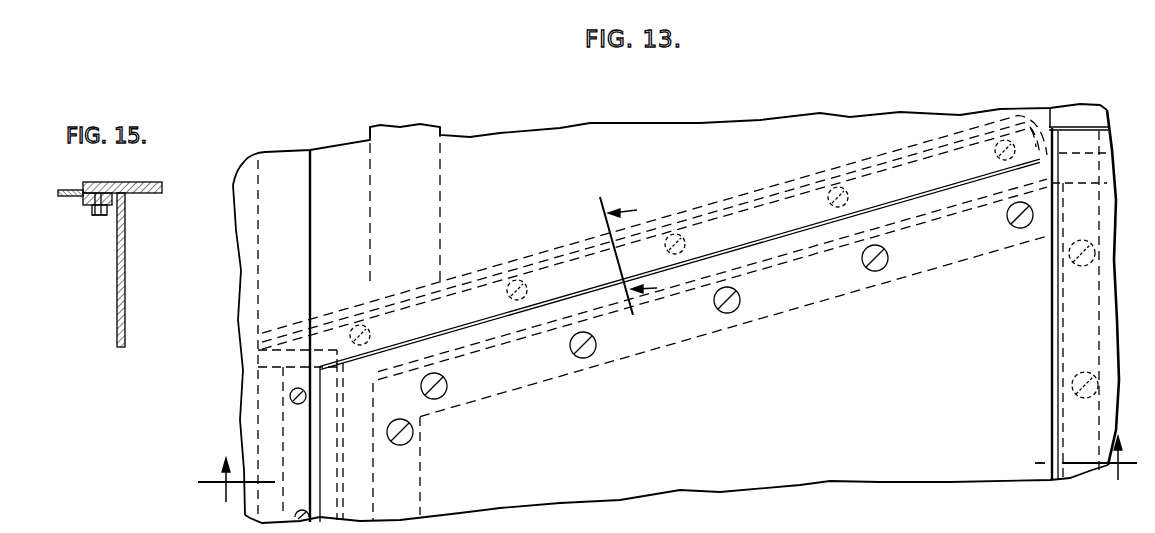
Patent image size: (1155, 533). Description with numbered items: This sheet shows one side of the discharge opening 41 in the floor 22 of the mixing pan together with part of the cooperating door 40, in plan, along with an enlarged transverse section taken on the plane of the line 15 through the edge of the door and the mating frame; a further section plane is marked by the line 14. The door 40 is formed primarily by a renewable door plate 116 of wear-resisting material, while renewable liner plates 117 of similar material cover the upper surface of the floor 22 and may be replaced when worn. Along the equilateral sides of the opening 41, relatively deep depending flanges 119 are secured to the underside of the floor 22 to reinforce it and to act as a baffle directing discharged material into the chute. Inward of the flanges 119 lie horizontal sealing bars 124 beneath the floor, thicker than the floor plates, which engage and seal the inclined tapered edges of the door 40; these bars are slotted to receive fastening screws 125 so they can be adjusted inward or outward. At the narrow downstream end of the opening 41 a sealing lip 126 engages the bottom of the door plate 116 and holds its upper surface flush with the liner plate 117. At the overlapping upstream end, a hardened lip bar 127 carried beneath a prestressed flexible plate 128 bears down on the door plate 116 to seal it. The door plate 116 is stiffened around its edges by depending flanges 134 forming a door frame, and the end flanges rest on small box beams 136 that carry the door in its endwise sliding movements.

In FIG. 13, the section line 14- 14 is at (667, 484).
In FIG. 13, the section line 15- 15 is at (645, 253).
In FIG. 15, the floor 22 is at (162, 190).
In FIG. 13, the floor 22 is at (323, 150).
In FIG. 15, the door 40 is at (59, 189).
In FIG. 13, the door 40 is at (908, 460).
In FIG. 13, the discharge opening 41 is at (860, 212).
In FIG. 15, the renewable door plate 116 is at (67, 197).
In FIG. 13, the renewable door plate 116 is at (514, 495).
In FIG. 15, the liner plate 117 is at (154, 181).
In FIG. 13, the liner plate 117 is at (242, 279).
In FIG. 15, the depending flange 119 is at (125, 315).
In FIG. 13, the depending flange 119 is at (925, 147).
In FIG. 15, the sealing bar 124 is at (87, 205).
In FIG. 13, the sealing bar 124 is at (712, 235).
In FIG. 15, the fastening screw 125 is at (106, 210).
In FIG. 13, the fastening screw 125 is at (507, 285).
In FIG. 13, the sealing lip 126 is at (313, 467).
In FIG. 13, the lip bar 127 is at (1052, 325).
In FIG. 13, the flexible plate 128 is at (1052, 347).
In FIG. 13, the depending flange 134 is at (1108, 380).
In FIG. 13, the box beam 136 is at (438, 219).